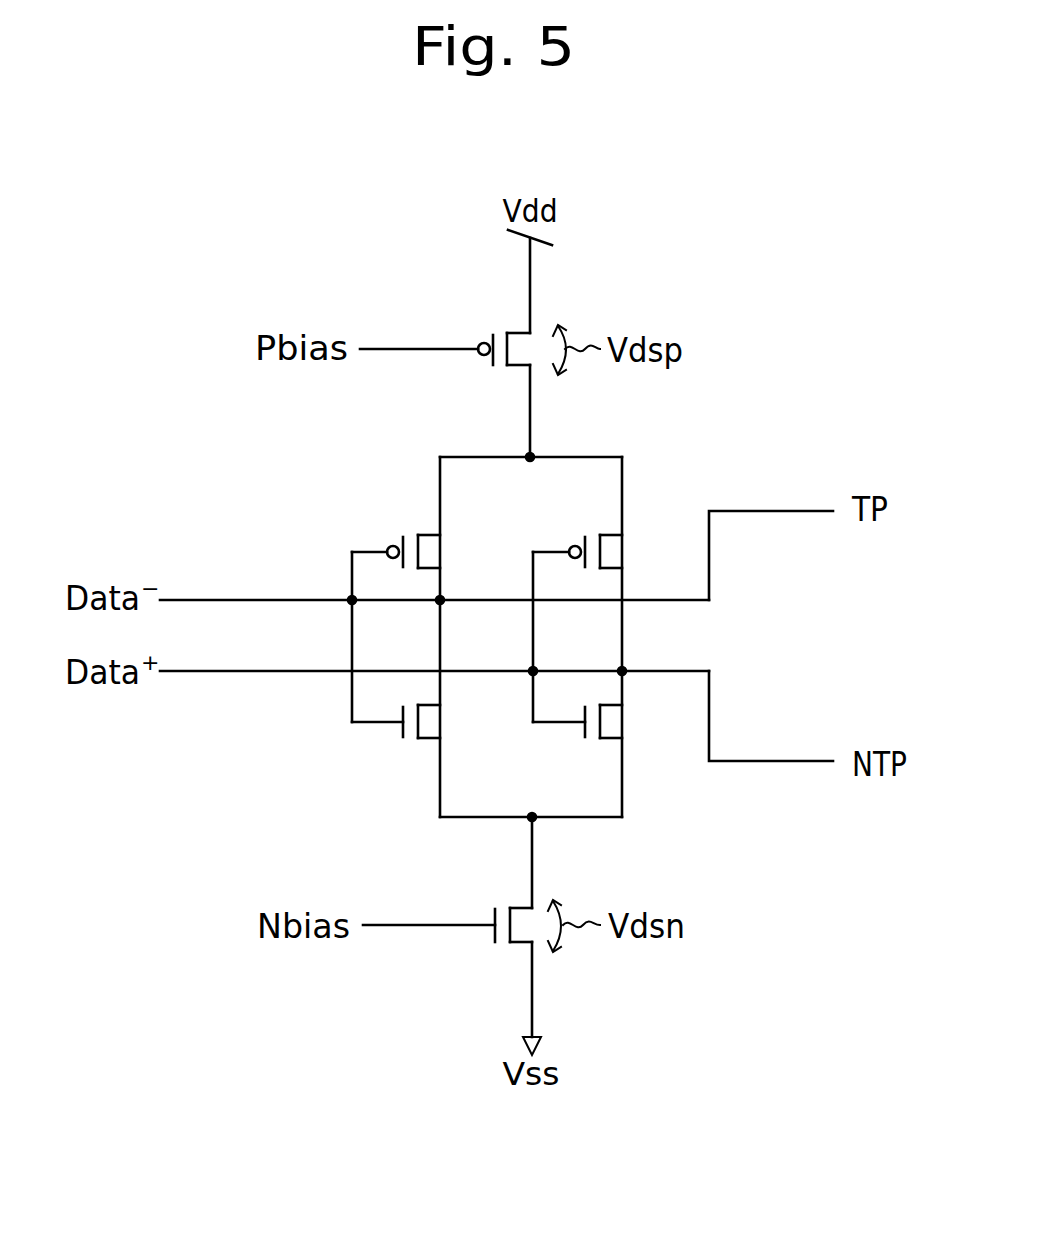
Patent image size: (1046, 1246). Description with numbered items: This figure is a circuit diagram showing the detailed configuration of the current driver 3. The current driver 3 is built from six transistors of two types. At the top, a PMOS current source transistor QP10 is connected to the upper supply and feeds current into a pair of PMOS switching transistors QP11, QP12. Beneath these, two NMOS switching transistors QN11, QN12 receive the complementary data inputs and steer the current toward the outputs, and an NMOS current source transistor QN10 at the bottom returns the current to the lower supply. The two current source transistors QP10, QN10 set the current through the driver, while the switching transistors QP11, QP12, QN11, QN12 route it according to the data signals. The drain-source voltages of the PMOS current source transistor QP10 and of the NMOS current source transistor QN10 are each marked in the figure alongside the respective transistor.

The current driver 3 is at (800, 282).
The PMOS current source transistor QP10 is at (491, 338).
The PMOS switching transistor QP11 is at (401, 538).
The PMOS switching transistor QP12 is at (583, 538).
The NMOS switching transistor QN11 is at (401, 736).
The NMOS switching transistor QN12 is at (583, 736).
The NMOS current source transistor QN10 is at (493, 939).